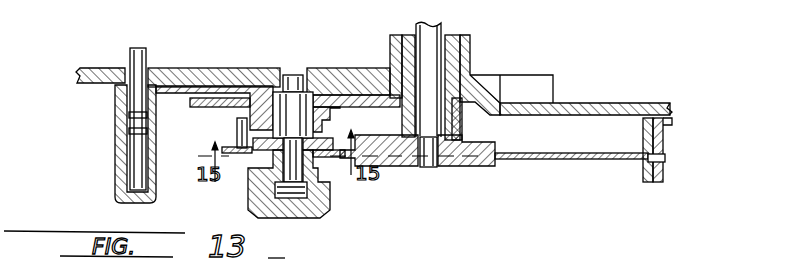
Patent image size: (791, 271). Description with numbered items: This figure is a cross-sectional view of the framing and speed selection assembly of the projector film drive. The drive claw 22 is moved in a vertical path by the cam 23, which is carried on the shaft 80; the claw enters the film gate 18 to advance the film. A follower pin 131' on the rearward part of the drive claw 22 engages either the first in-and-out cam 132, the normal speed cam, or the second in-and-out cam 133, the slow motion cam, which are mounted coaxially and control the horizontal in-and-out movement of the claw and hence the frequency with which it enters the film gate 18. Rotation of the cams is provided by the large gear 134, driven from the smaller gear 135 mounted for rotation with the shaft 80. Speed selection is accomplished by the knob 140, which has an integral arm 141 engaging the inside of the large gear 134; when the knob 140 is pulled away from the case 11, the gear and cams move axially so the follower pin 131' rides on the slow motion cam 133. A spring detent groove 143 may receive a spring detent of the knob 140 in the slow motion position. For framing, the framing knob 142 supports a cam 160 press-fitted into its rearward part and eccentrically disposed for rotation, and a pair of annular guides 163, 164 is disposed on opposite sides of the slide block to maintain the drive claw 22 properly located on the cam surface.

The case 11 is at (103, 82).
The film gate 18 is at (673, 157).
The drive claw 22 is at (578, 158).
The cam 23 is at (457, 167).
The shaft 80 is at (438, 40).
The follower pin 131' is at (217, 131).
The first in-and-out cam 132 is at (333, 127).
The second in-and-out cam 133 is at (348, 107).
The large gear 134 is at (192, 106).
The smaller gear 135 is at (462, 127).
The knob 140 is at (142, 200).
The arm 141 is at (176, 92).
The framing knob 142 is at (310, 205).
The spring detent groove 143 is at (130, 118).
The cam 160 is at (310, 192).
The annular guide 163 is at (259, 152).
The annular guide 164 is at (321, 88).